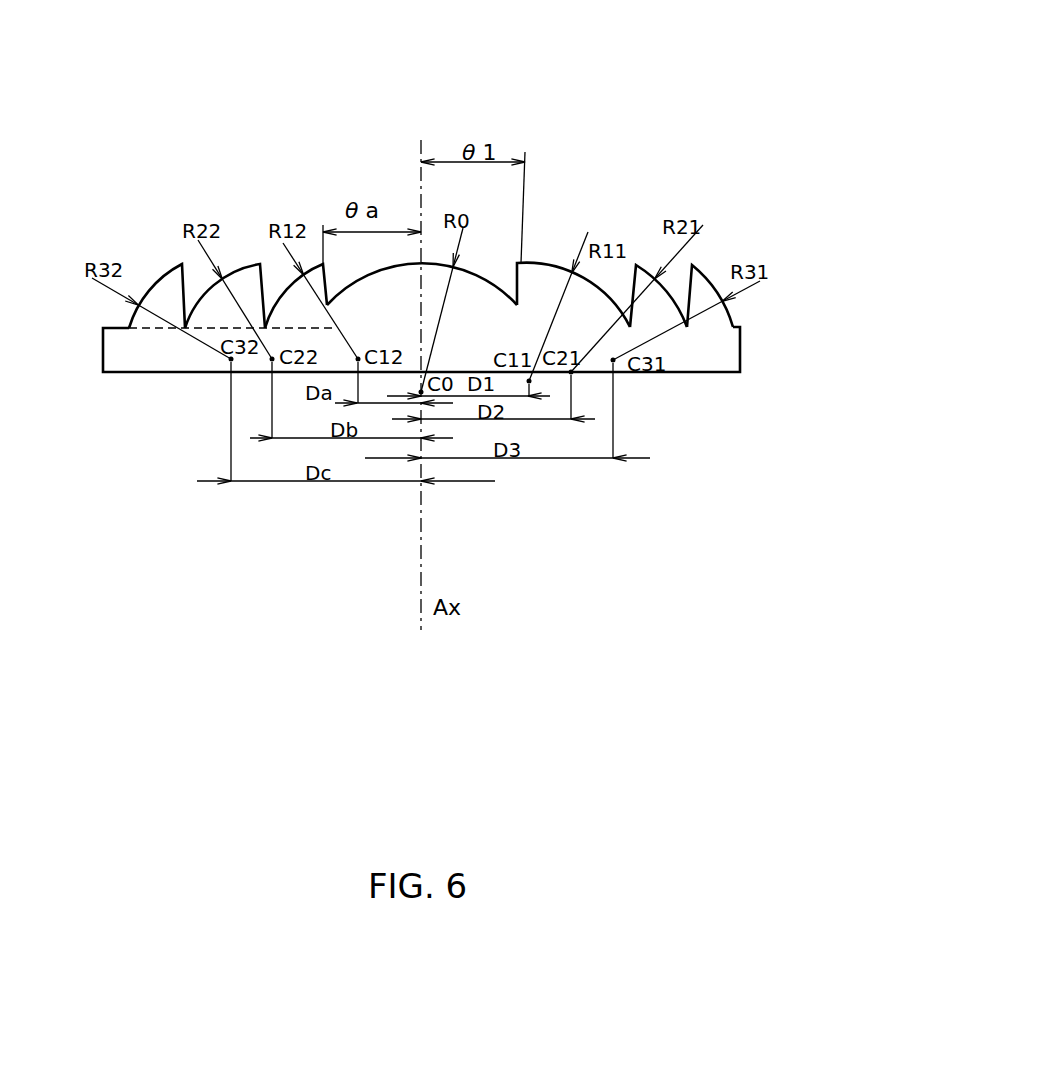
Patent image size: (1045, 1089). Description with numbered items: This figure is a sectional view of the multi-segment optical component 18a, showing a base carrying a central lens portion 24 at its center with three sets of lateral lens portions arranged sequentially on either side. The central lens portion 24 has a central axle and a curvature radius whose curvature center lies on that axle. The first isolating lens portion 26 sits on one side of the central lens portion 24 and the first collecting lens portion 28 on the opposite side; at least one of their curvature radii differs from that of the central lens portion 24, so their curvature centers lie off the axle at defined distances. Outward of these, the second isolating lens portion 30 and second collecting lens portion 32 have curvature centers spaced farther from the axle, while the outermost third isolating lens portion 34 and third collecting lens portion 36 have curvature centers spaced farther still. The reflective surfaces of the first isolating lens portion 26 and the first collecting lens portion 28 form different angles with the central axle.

The multi-segment optical component 18a is at (421, 191).
The central lens portion 24 is at (484, 295).
The first isolating lens portion 26 is at (529, 283).
The first collecting lens portion 28 is at (311, 268).
The second isolating lens portion 30 is at (652, 272).
The second collecting lens portion 32 is at (244, 287).
The third isolating lens portion 34 is at (719, 285).
The third collecting lens portion 36 is at (160, 297).